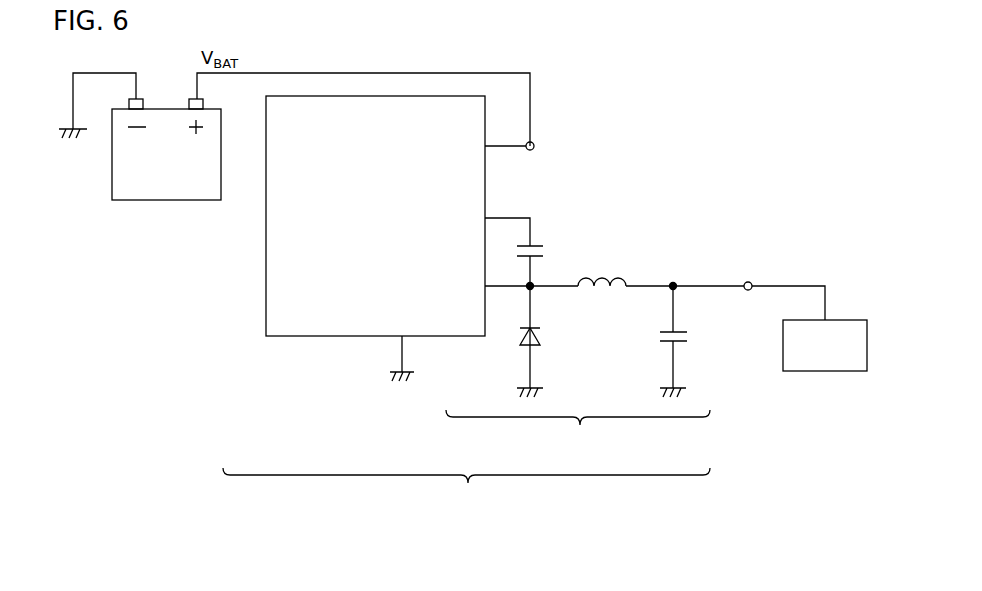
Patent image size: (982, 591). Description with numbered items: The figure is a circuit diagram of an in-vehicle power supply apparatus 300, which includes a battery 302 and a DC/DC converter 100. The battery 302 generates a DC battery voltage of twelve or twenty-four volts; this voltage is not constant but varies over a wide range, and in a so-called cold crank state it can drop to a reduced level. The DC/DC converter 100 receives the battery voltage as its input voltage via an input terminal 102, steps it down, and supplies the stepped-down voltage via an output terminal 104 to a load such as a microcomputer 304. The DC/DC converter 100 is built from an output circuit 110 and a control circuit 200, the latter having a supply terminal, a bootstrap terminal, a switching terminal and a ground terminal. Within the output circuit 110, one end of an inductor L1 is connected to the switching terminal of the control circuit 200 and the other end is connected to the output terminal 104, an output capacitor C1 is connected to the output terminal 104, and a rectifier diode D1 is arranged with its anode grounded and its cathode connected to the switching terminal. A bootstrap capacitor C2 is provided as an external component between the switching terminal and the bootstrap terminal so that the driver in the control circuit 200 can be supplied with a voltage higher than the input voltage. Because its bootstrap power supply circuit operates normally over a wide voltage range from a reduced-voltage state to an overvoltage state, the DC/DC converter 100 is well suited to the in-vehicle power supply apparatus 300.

The battery 302 is at (168, 200).
The control circuit 200 is at (300, 336).
The input terminal 102 is at (535, 146).
The output terminal 104 is at (748, 282).
The microcomputer 304 is at (810, 372).
The output circuit 110 is at (578, 431).
The DC/DC converter 100 is at (466, 490).
The in-vehicle power supply apparatus 300 is at (442, 573).
The output capacitor C1 is at (655, 338).
The bootstrap capacitor C2 is at (551, 251).
The inductor L1 is at (597, 297).
The rectifier diode D1 is at (516, 336).